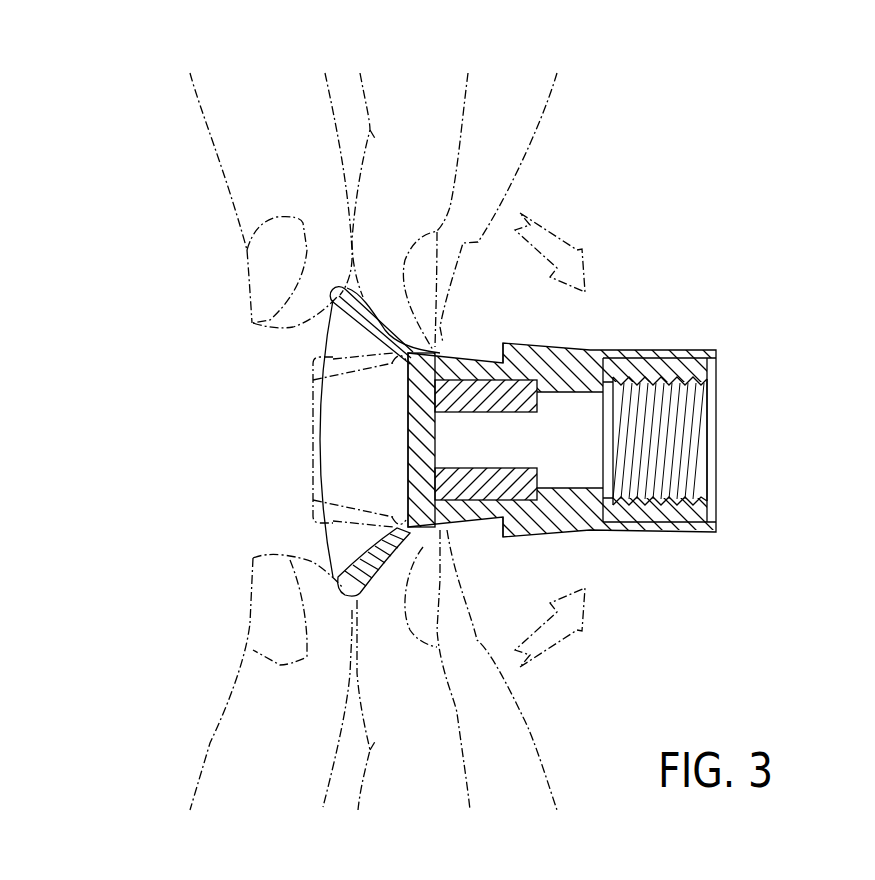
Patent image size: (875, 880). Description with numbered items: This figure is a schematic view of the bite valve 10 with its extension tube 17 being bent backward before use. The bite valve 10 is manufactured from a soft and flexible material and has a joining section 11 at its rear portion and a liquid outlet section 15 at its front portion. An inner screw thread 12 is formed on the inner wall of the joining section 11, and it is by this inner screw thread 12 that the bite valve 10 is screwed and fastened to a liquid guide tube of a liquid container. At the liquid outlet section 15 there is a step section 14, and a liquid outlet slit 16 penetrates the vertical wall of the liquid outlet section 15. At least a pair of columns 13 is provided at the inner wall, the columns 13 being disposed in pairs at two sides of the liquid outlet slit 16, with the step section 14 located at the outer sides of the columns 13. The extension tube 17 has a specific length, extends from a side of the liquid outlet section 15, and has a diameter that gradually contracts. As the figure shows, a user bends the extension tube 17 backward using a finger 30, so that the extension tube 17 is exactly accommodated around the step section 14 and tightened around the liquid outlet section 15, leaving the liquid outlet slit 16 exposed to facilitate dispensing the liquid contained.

The bite valve 10 is at (633, 549).
The joining section 11 is at (687, 349).
The inner screw thread 12 is at (708, 487).
The columns 13 is at (533, 380).
The step section 14 is at (505, 348).
The liquid outlet section 15 is at (408, 467).
The liquid outlet slit 16 is at (408, 427).
The extension tube 17 is at (352, 556).
The finger 30 is at (243, 180).